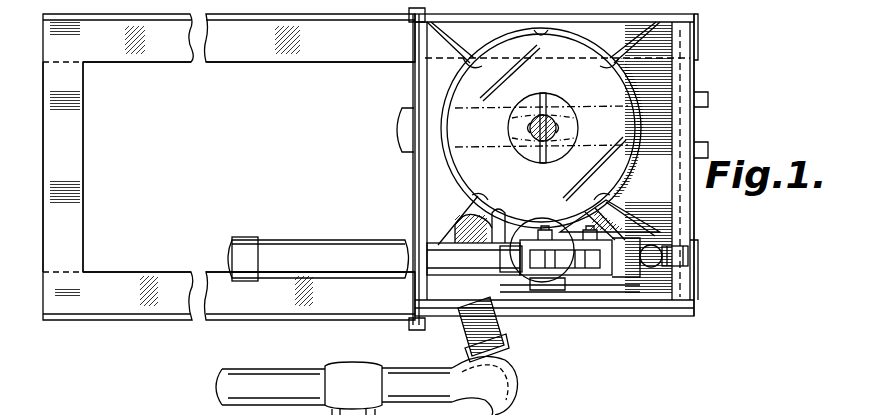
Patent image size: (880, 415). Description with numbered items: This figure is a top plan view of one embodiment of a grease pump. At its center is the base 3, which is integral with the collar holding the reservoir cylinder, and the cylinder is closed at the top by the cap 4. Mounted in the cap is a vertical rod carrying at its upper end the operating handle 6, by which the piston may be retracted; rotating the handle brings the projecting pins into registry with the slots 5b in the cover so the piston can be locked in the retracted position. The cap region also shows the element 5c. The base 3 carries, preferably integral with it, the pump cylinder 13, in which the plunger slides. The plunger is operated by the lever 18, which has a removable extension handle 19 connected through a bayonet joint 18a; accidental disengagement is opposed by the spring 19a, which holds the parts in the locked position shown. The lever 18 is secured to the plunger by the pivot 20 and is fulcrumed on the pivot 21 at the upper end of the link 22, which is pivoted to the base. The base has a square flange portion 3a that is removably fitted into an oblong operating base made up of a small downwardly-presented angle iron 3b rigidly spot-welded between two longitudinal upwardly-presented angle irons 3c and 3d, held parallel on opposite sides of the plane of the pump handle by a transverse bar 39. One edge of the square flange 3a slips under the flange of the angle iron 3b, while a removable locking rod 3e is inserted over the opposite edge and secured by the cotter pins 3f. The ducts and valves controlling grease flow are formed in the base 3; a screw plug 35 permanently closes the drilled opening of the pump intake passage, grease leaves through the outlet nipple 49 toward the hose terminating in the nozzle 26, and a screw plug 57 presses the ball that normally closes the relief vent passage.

The base 3 is at (575, 10).
The square flange portion 3a is at (740, 215).
The angle iron 3b is at (684, 42).
The angle iron 3c is at (357, 52).
The angle iron 3d is at (352, 305).
The removable locking rod 3e is at (422, 172).
The cotter pins 3f is at (405, 334).
The cap 4 is at (667, 126).
The slots 5b is at (528, 128).
The key 5c is at (549, 97).
The operating handle 6 is at (404, 128).
The pump cylinder 13 is at (525, 276).
The lever 18 is at (592, 284).
The bayonet joint 18a is at (500, 212).
The extension handle 19 is at (280, 252).
The spring 19a is at (530, 240).
The pivot 20 is at (565, 230).
The pivot 21 is at (645, 288).
The link 22 is at (628, 292).
The nozzle 26 is at (505, 352).
The screw plug 35 is at (575, 302).
The frame rail 39 is at (75, 160).
The outlet nipple 49 is at (662, 264).
The screw plug 57 is at (666, 290).